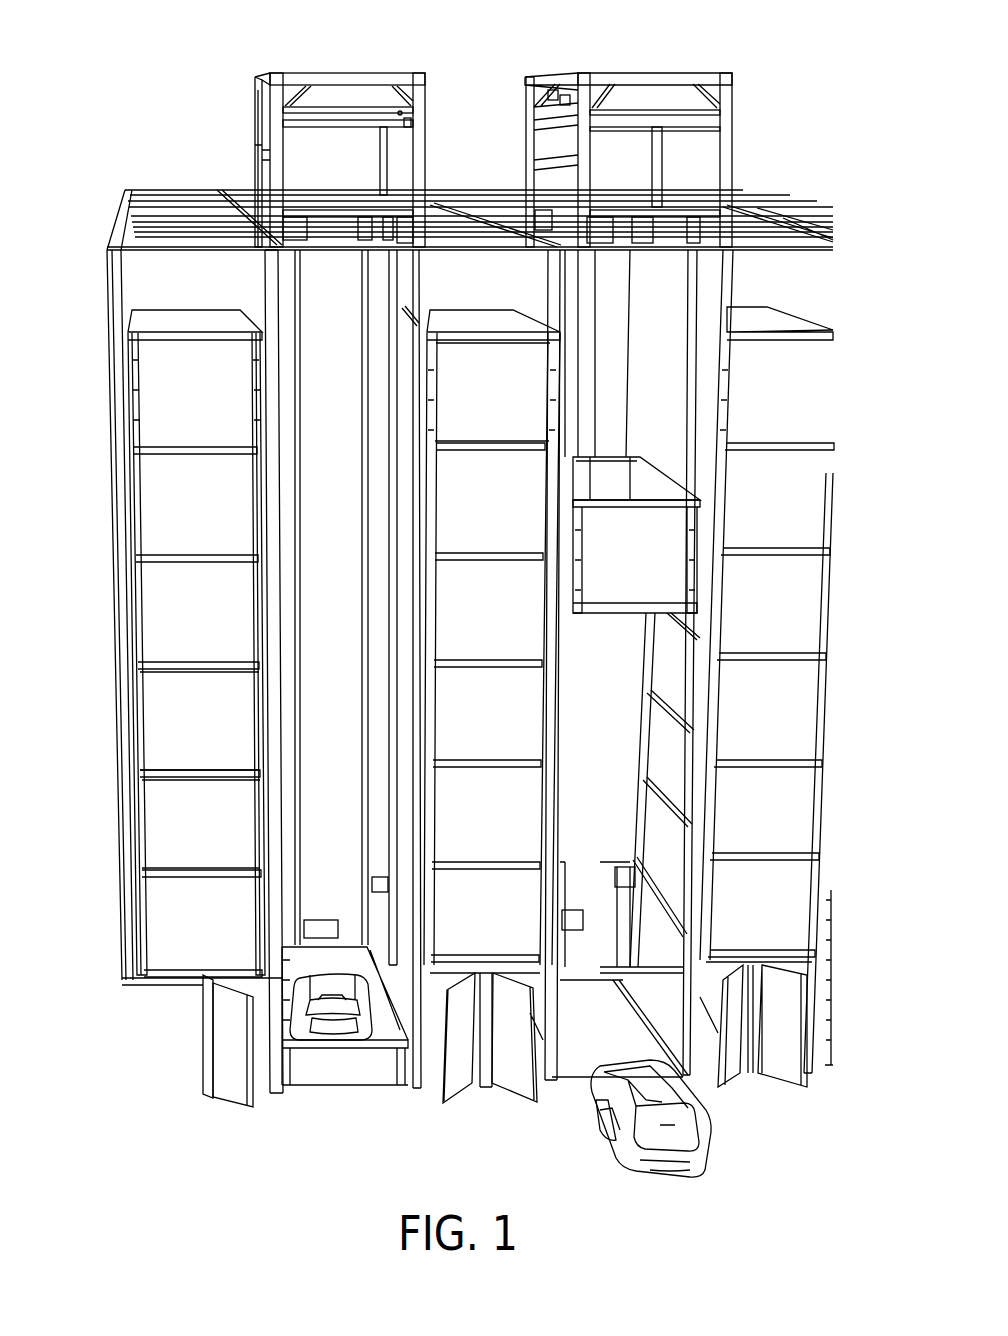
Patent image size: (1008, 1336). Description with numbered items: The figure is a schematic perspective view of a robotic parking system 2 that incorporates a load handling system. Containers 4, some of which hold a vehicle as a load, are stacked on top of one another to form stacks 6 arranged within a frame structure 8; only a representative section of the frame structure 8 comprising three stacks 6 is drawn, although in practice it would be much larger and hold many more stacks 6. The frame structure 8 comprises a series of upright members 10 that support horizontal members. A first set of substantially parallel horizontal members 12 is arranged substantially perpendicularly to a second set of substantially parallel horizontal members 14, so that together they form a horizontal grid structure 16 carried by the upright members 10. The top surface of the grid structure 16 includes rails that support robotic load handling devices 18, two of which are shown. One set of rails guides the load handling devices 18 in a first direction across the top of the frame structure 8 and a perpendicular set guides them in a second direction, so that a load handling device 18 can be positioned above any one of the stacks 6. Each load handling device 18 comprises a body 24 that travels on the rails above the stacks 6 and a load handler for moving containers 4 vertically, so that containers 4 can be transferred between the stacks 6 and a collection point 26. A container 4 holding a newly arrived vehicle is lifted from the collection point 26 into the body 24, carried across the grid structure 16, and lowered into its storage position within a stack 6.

The robotic parking system 2 is at (783, 158).
The container 4 is at (208, 828).
The stack 6 is at (168, 722).
The frame structure 8 is at (148, 285).
The upright member 10 is at (120, 567).
The first set of horizontal members 12 is at (118, 222).
The second set of horizontal members 14 is at (152, 194).
The grid structure 16 is at (810, 262).
The robotic load handling device 18 is at (257, 63).
The body 24 is at (641, 76).
The collection point 26 is at (337, 1107).